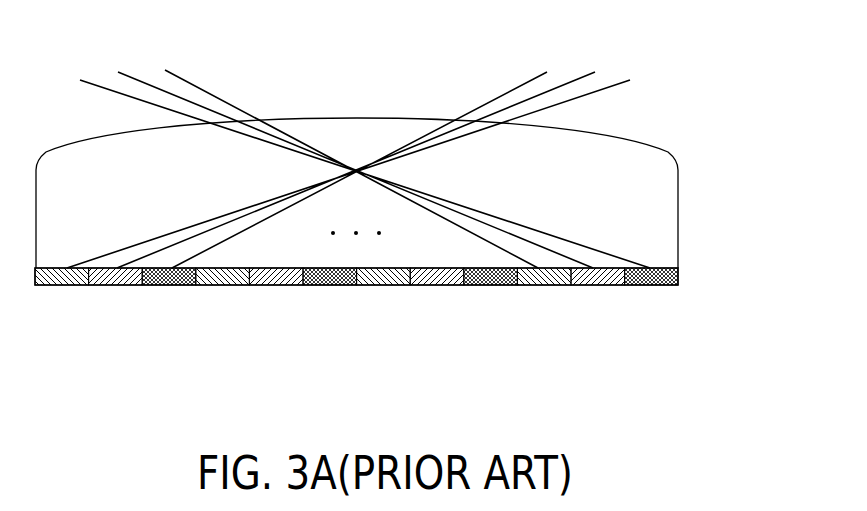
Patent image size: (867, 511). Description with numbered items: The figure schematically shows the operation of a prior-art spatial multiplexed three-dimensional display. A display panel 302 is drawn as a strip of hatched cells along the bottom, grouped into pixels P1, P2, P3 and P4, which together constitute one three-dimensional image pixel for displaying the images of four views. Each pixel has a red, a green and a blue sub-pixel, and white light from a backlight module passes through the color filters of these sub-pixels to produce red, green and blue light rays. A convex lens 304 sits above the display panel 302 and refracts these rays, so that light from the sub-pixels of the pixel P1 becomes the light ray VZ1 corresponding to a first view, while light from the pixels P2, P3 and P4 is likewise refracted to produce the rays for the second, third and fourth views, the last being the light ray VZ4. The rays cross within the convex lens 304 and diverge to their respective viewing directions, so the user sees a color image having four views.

The convex lens 304 is at (657, 147).
The display panel 302 is at (678, 276).
The light ray corresponding to a first view VZ1 is at (558, 50).
The light ray corresponding to a fourth view VZ4 is at (152, 50).
The pixel P1 is at (35, 320).
The pixel P2 is at (196, 320).
The pixel P3 is at (357, 320).
The pixel P4 is at (678, 320).